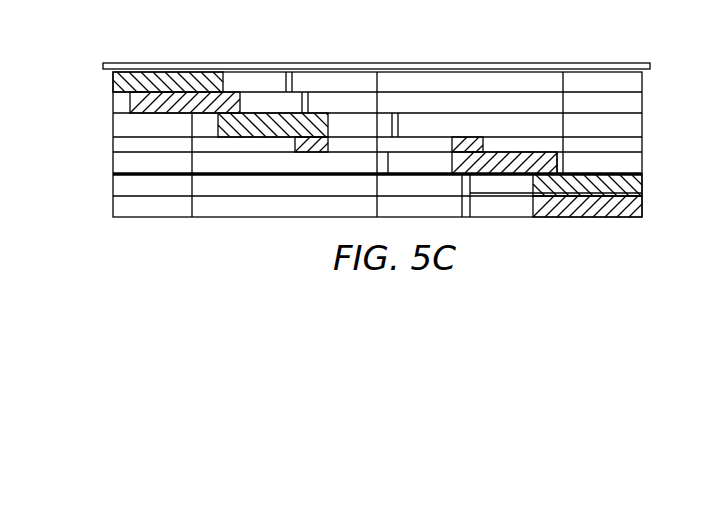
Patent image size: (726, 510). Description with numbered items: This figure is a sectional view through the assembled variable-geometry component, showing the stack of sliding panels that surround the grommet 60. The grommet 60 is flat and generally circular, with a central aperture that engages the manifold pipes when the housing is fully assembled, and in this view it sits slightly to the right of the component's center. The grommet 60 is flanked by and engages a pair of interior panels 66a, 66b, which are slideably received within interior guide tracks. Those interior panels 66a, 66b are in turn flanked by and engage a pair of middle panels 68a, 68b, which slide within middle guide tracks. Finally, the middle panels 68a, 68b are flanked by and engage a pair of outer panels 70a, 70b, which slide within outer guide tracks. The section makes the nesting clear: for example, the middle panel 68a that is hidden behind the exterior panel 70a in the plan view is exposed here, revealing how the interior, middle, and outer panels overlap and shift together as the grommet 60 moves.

The grommet 60 is at (318, 140).
The interior panel 66a is at (493, 163).
The interior panel 66b is at (268, 128).
The middle panel 68a is at (616, 185).
The middle panel 68b is at (152, 102).
The outer panel 70a is at (583, 208).
The outer panel 70b is at (160, 85).